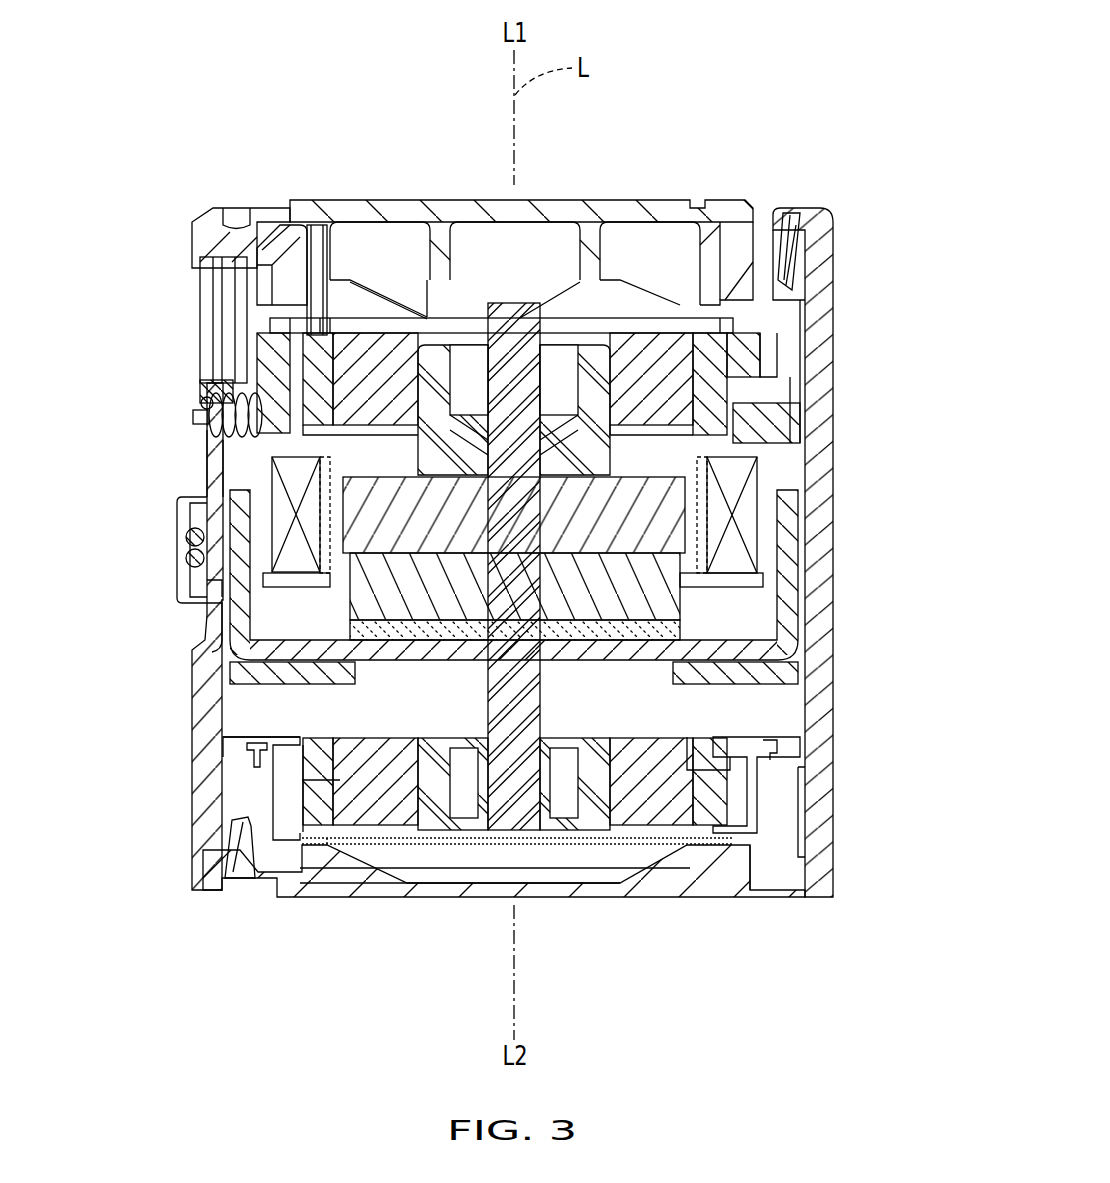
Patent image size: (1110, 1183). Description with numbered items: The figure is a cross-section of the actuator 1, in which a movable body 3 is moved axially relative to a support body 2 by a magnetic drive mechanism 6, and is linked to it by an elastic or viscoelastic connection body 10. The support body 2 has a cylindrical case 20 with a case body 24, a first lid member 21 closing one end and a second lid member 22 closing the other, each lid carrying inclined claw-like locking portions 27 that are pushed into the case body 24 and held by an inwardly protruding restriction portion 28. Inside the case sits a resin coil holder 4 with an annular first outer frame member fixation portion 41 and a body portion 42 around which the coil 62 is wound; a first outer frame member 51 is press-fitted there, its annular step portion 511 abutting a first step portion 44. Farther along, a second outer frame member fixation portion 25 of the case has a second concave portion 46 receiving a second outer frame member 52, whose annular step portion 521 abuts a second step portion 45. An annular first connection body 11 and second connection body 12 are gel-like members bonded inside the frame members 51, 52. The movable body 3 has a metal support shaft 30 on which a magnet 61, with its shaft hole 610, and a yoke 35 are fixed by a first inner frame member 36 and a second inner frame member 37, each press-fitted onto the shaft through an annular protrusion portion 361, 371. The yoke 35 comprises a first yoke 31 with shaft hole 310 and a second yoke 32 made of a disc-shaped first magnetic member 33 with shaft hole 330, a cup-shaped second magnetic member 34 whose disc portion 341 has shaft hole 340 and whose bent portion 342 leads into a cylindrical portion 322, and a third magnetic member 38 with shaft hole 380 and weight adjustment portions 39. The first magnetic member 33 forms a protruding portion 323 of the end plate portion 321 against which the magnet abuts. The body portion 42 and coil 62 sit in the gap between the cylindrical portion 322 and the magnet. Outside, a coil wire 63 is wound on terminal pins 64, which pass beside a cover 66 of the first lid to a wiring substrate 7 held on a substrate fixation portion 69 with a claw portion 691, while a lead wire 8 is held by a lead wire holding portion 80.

The actuator 1 is at (152, 92).
The support body 2 is at (858, 317).
The movable body 3 is at (222, 701).
The coil holder 4 is at (174, 362).
The magnetic drive mechanism 6 is at (589, 538).
The wiring substrate 7 is at (210, 441).
The lead wire 8 is at (190, 563).
The connection body 10 is at (492, 543).
The first connection body 11 is at (492, 265).
The second connection body 12 is at (515, 864).
The case 20 is at (186, 805).
The first lid member 21 is at (255, 195).
The second lid member 22 is at (414, 908).
The case body 24 is at (218, 840).
The second outer frame member fixation portion 25 is at (280, 738).
The locking portion 27 is at (237, 855).
The restriction portion 28 is at (242, 892).
The support shaft 30 is at (518, 390).
The first yoke 31 is at (637, 515).
The second yoke 32 is at (519, 609).
The first magnetic member 33 is at (501, 616).
The second magnetic member 34 is at (509, 596).
The yoke 35 is at (517, 597).
The first inner frame member 36 is at (514, 300).
The second inner frame member 37 is at (514, 847).
The third magnetic member 38 is at (240, 683).
The weight adjustment portion 39 is at (364, 690).
The first outer frame member fixation portion 41 is at (255, 318).
The body portion 42 is at (213, 573).
The first step portion 44 is at (836, 388).
The second step portion 45 is at (528, 797).
The second concave portion 46 is at (748, 801).
The first outer frame member 51 is at (313, 345).
The second outer frame member 52 is at (318, 818).
The magnet 61 is at (615, 586).
The coil 62 is at (735, 558).
The coil wire 63 is at (230, 386).
The terminal pin 64 is at (193, 420).
The cover 66 is at (200, 301).
The substrate fixation portion 69 is at (207, 487).
The lead wire holding portion 80 is at (180, 519).
The shaft hole 310 is at (533, 497).
The end plate portion 321 is at (106, 622).
The cylindrical portion 322 is at (205, 619).
The protruding portion 323 is at (290, 618).
The shaft hole 330 is at (492, 628).
The shaft hole 340 is at (492, 670).
The disc portion 341 is at (268, 650).
The bent portion 342 is at (240, 663).
The annular protrusion portion 361 is at (473, 440).
The annular protrusion portion 371 is at (473, 735).
The shaft hole 380 is at (490, 695).
The annular step portion 511 is at (735, 407).
The annular step portion 521 is at (528, 797).
The shaft hole 610 is at (533, 576).
The claw portion 691 is at (201, 404).